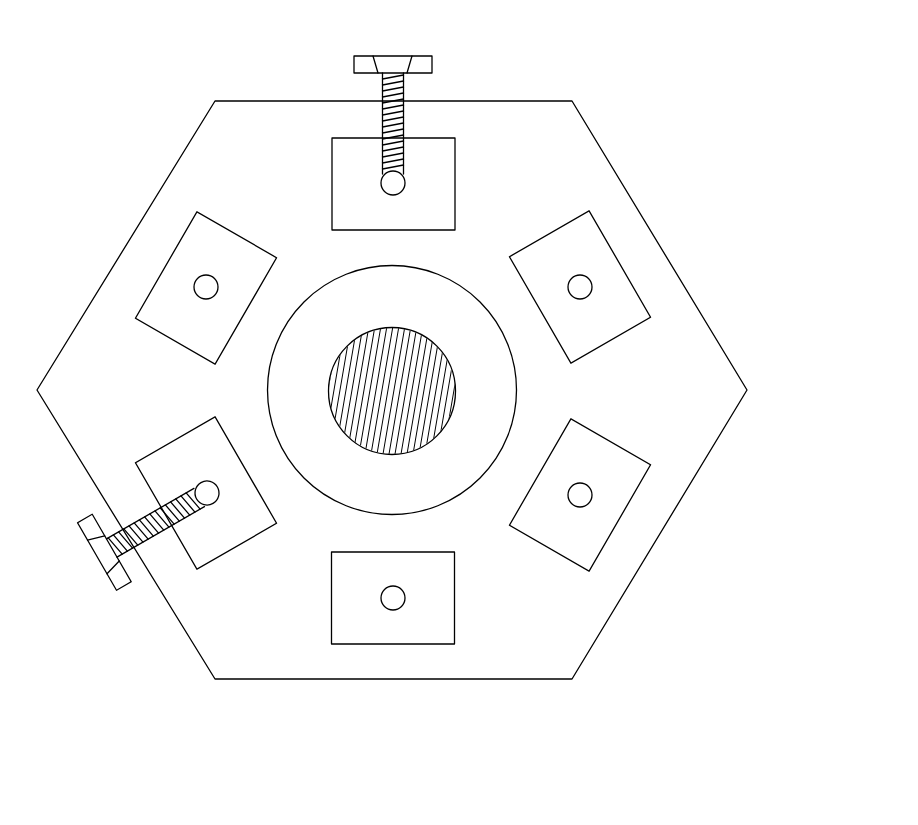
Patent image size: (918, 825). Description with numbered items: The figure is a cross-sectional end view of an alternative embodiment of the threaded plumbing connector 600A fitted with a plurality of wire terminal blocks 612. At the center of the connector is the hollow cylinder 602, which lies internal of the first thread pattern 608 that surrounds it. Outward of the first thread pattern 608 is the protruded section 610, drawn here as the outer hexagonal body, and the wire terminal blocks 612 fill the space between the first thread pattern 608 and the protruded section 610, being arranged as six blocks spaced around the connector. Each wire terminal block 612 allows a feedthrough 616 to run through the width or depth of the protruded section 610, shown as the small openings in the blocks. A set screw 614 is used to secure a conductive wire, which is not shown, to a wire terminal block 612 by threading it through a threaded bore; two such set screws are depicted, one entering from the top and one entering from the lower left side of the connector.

The threaded plumbing connector 600A is at (610, 56).
The hollow cylinder 602 is at (392, 327).
The first thread pattern 608 is at (425, 268).
The protruded section 610 is at (662, 535).
The wire terminal blocks 612 is at (427, 183).
The set screw 614 is at (394, 54).
The feedthrough 616 is at (206, 274).